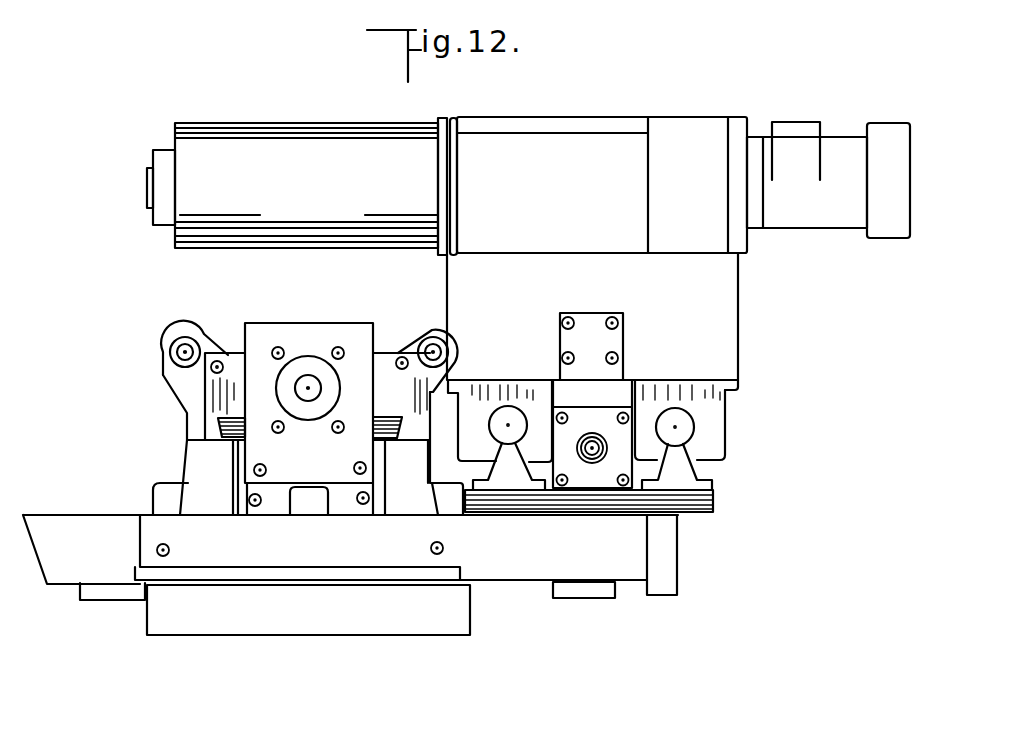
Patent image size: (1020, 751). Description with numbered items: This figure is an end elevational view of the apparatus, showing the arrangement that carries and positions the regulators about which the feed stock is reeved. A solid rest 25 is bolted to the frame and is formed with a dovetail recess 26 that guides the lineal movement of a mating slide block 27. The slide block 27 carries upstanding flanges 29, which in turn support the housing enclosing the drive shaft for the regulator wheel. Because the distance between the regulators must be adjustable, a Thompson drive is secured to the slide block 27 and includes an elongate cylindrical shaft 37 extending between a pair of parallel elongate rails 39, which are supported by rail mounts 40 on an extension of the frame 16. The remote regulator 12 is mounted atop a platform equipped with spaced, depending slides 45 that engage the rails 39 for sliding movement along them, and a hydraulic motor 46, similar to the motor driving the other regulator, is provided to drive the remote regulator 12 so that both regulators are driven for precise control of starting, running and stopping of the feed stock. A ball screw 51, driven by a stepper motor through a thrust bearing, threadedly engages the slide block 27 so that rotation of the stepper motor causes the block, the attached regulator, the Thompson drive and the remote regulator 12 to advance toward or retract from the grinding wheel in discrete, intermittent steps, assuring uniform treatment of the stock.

The remote regulator 12 is at (187, 127).
The hydraulic motor 46 is at (810, 215).
The upstanding flanges 29 is at (172, 373).
The solid rest 25 is at (195, 412).
The dovetail recess 26 is at (215, 438).
The slide block 27 is at (392, 435).
The ball screw 51 is at (308, 395).
The rails 39 is at (498, 412).
The depending slides 45 is at (500, 388).
The cylindrical shaft 37 is at (592, 452).
The rail mounts 40 is at (713, 483).
The frame 16 is at (665, 559).